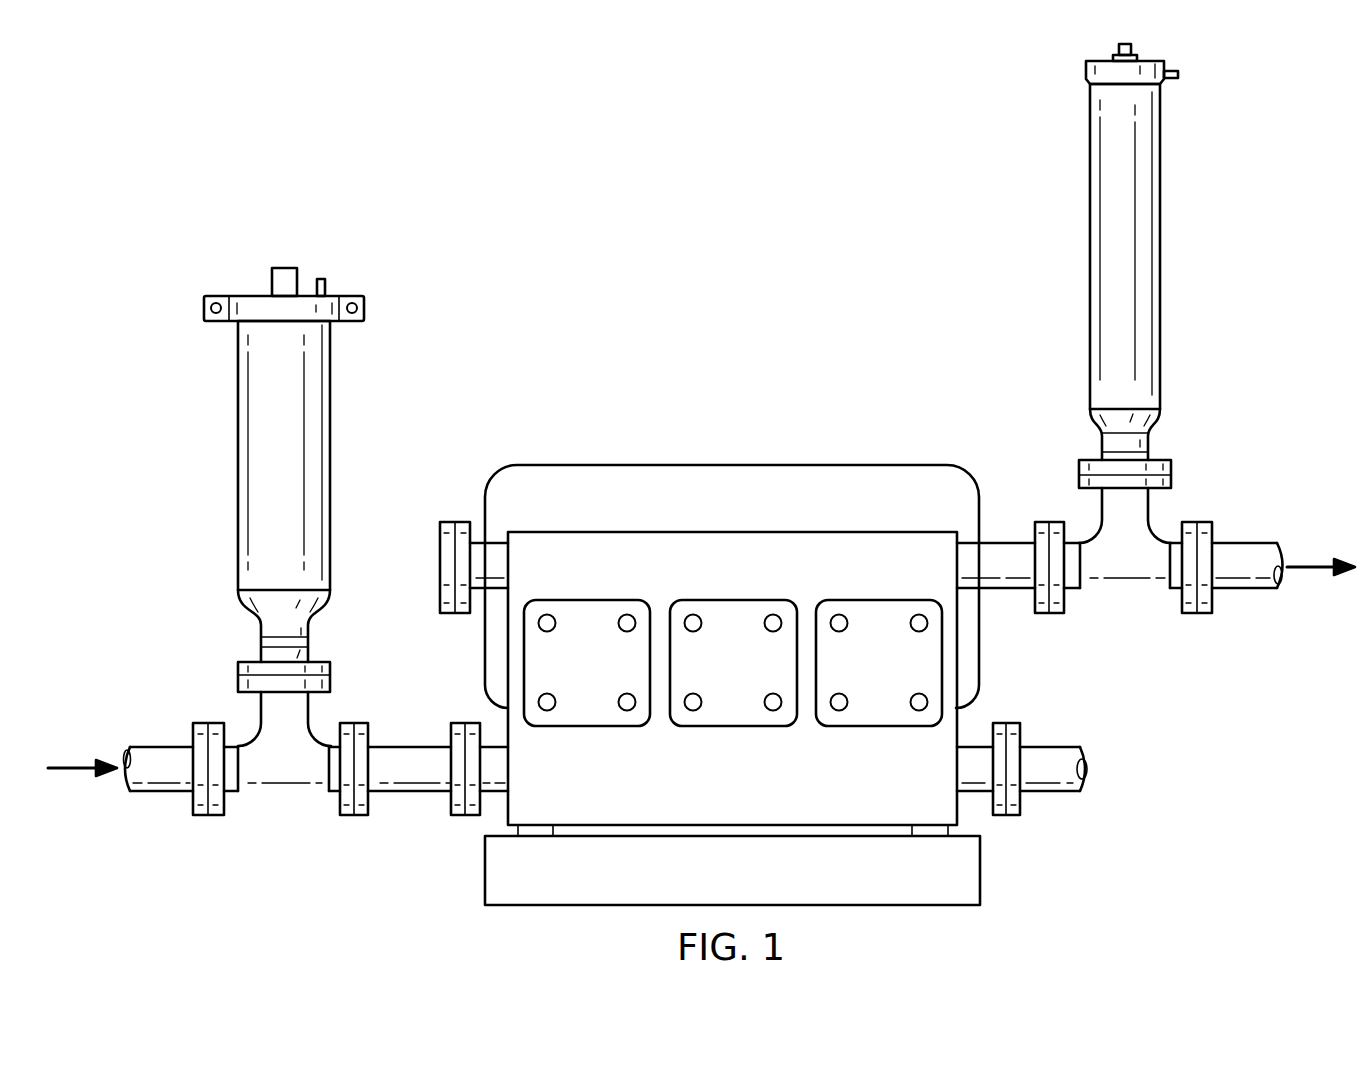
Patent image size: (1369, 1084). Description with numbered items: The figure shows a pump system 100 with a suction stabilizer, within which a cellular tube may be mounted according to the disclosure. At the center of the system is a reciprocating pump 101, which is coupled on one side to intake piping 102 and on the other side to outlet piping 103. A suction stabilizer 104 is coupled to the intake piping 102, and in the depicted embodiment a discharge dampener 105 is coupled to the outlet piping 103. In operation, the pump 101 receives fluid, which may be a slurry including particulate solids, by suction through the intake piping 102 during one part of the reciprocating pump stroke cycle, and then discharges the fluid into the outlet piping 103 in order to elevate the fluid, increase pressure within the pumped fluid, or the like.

The pump system 100 is at (448, 100).
The reciprocating pump 101 is at (778, 465).
The intake piping 102 is at (162, 793).
The outlet piping 103 is at (1241, 591).
The suction stabilizer 104 is at (238, 410).
The discharge dampener 105 is at (1160, 172).